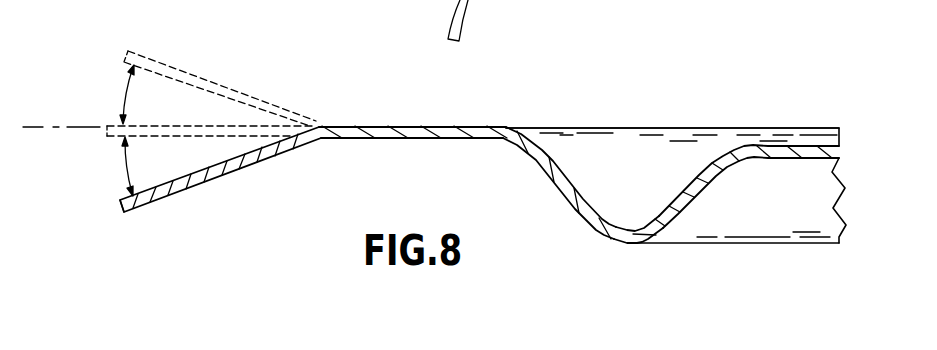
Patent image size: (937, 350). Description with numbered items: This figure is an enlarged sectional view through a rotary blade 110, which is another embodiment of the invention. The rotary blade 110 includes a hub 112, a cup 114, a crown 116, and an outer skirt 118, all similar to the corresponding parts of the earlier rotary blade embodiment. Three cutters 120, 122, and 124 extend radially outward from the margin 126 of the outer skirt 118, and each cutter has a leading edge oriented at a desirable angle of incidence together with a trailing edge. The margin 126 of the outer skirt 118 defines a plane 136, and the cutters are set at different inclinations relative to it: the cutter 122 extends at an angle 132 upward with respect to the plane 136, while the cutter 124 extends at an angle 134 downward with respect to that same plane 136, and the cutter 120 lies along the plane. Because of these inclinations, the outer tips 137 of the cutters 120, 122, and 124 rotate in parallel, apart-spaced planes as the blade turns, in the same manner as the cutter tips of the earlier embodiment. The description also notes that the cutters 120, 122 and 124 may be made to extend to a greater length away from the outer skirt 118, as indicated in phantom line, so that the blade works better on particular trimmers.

The rotary blade 110 is at (676, 156).
The hub 112 is at (747, 186).
The cup 114 is at (734, 261).
The crown 116 is at (616, 253).
The outer skirt 118 is at (554, 183).
The cutter 120 is at (210, 81).
The cutter 122 is at (220, 76).
The cutter 124 is at (220, 176).
The margin 126 is at (413, 160).
The angle 132 is at (97, 89).
The angle 134 is at (98, 166).
The plane 136 is at (430, 133).
The outer tips 137 is at (75, 121).